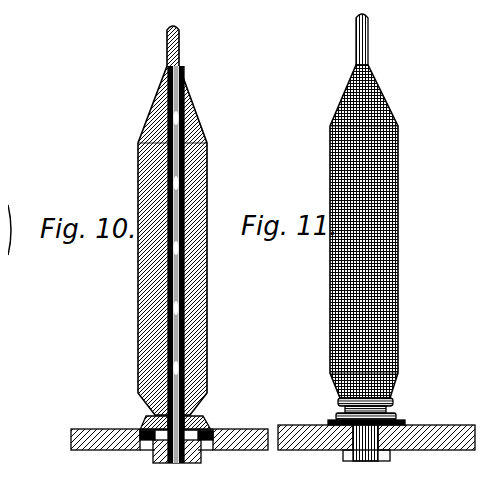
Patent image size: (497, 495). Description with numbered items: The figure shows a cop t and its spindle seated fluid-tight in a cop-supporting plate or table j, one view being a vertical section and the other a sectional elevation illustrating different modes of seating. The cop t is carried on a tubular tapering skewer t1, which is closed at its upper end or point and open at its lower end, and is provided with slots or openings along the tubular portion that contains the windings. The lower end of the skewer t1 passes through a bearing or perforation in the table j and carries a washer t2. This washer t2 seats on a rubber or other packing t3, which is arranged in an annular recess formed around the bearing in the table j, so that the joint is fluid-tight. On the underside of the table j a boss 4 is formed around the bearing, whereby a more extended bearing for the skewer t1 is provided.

In FIG. 10, the cop t is at (130, 143).
In FIG. 11, the cop t is at (322, 275).
In FIG. 10, the tubular tapering skewer t1 is at (166, 462).
In FIG. 11, the tubular tapering skewer t1 is at (361, 42).
In FIG. 10, the washer t2 is at (192, 415).
In FIG. 11, the washer t2 is at (330, 393).
In FIG. 10, the packing t3 is at (136, 420).
In FIG. 11, the packing t3 is at (388, 408).
In FIG. 10, the table j is at (140, 444).
In FIG. 11, the table j is at (411, 443).
In FIG. 10, the boss 4 is at (193, 450).
In FIG. 11, the boss 4 is at (336, 450).